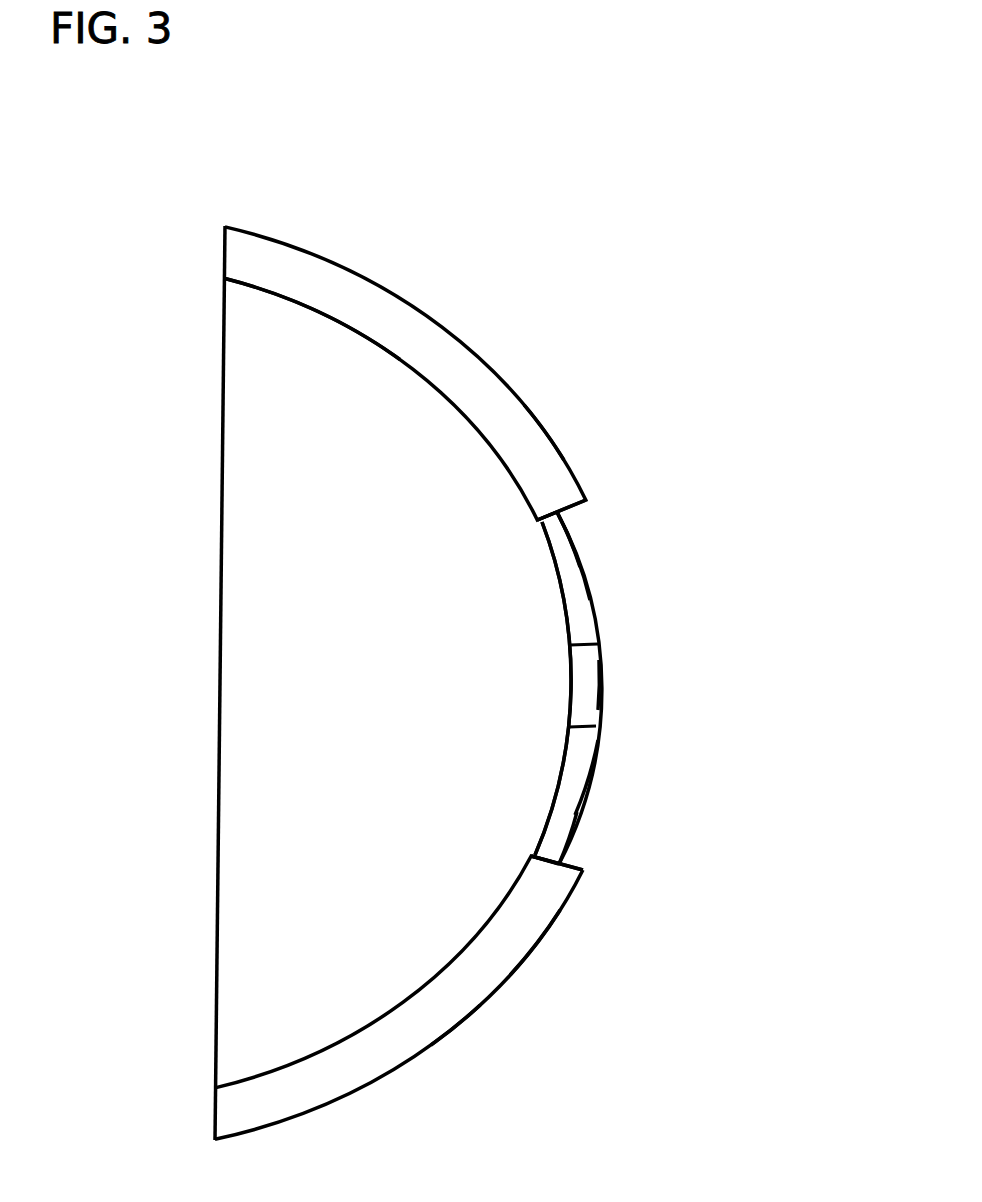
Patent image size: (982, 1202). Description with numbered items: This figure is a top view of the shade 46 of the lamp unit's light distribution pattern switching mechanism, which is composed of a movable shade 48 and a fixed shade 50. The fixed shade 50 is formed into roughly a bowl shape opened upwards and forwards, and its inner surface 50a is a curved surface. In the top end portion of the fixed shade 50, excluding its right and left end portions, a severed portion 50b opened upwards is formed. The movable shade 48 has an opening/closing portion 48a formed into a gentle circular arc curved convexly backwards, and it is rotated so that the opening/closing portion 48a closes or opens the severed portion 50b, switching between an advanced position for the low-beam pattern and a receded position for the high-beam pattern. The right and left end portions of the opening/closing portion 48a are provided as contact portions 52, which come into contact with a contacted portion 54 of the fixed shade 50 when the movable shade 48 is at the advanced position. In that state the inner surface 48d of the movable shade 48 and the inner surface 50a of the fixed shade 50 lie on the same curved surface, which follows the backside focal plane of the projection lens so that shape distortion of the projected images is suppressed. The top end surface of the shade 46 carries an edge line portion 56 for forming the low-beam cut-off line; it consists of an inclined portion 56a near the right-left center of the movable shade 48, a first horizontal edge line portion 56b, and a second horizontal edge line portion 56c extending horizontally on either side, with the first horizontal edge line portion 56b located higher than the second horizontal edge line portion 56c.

The shade 46 is at (652, 306).
The movable shade 48 is at (616, 630).
The opening/closing portion 48a is at (583, 780).
The inner surface of the movable shade 48d is at (563, 757).
The fixed shade 50 is at (428, 304).
The inner surface of the fixed shade 50a is at (400, 363).
The severed portion 50b is at (585, 570).
The contact portion 52 is at (548, 521).
The contacted portion 54 is at (578, 500).
The edge line portion 56 is at (537, 943).
The inclined portion 56a is at (590, 685).
The first horizontal edge line portion 56b is at (447, 1018).
The second horizontal edge line portion 56c is at (532, 436).